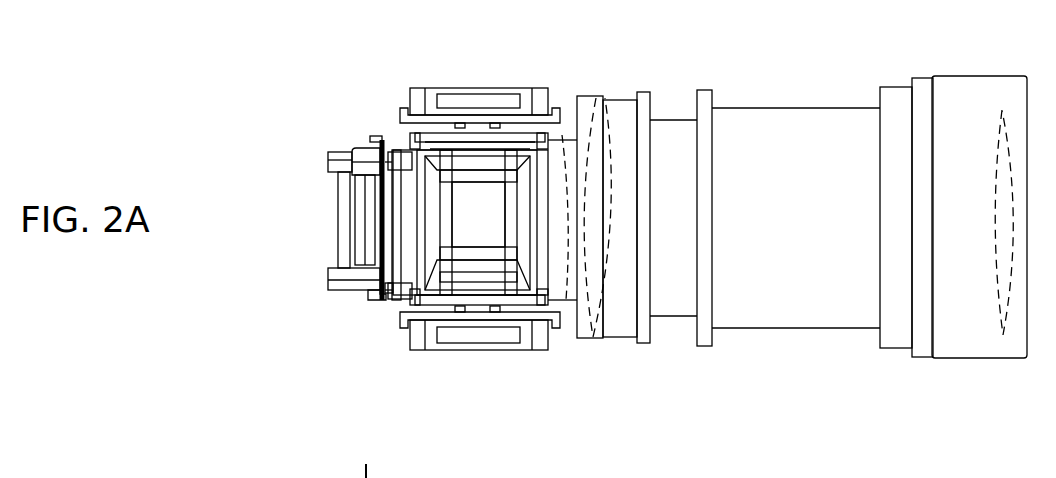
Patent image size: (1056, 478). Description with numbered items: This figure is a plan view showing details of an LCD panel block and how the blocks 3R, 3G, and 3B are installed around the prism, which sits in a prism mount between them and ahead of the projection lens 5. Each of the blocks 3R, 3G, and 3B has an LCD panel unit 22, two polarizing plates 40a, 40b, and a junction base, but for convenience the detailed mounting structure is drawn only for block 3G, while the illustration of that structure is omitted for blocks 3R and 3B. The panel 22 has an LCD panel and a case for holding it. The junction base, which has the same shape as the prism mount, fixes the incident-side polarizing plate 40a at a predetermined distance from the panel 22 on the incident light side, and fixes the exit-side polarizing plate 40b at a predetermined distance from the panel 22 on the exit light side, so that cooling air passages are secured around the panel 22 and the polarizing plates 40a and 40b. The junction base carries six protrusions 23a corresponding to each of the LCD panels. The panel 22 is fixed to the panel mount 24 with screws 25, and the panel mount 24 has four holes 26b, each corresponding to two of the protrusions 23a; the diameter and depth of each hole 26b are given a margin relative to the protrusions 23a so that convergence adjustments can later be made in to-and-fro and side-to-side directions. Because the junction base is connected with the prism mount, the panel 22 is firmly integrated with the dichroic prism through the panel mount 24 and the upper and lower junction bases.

The block 3R is at (478, 78).
The block 3G is at (325, 293).
The block 3B is at (465, 358).
The projection lens 5 is at (760, 305).
The LCD panel unit 22 is at (365, 277).
The protrusion 23a is at (410, 285).
The panel mount 24 is at (373, 300).
The screw 25 is at (326, 165).
The hole 26b is at (380, 138).
The incident-side polarizing plate 40a is at (338, 222).
The exit-side polarizing plate 40b is at (363, 150).